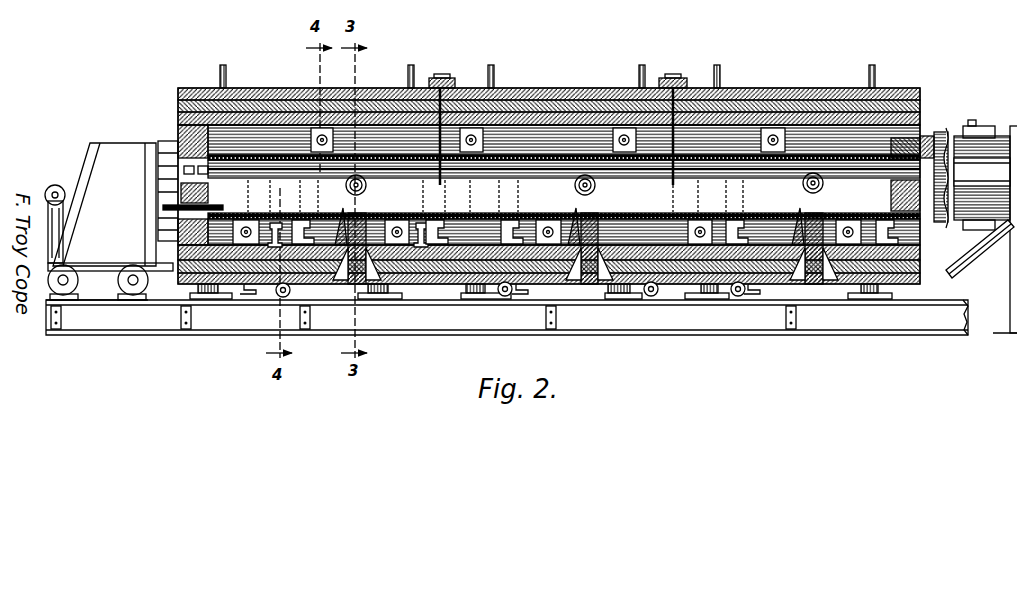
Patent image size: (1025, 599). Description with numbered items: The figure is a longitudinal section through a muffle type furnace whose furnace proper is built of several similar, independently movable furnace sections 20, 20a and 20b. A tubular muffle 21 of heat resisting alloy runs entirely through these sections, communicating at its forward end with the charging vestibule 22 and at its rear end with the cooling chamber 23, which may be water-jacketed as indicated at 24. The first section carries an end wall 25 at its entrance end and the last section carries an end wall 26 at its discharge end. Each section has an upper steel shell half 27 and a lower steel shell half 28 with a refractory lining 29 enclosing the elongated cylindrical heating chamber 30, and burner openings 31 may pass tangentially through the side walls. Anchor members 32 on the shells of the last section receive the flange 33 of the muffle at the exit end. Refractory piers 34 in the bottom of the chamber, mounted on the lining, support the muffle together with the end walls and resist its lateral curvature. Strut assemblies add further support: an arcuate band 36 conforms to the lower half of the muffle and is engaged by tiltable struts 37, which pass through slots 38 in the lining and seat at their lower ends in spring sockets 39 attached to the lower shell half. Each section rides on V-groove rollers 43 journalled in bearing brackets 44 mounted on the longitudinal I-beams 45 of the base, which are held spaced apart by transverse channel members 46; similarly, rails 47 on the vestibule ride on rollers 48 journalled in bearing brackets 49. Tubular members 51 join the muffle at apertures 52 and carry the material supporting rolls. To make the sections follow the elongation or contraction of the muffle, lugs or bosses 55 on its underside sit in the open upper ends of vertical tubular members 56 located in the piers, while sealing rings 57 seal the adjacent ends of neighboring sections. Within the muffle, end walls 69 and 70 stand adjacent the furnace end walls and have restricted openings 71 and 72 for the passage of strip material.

The furnace section 20 is at (233, 80).
The furnace section 20a is at (545, 80).
The furnace section 20b is at (773, 80).
The tubular muffle 21 is at (175, 128).
The charging vestibule 22 is at (106, 144).
The cooling chamber 23 is at (996, 128).
The water jacket 24 is at (982, 122).
The end wall 25 is at (185, 130).
The end wall 26 is at (910, 130).
The upper steel shell half 27 is at (360, 80).
The lower steel shell half 28 is at (244, 280).
The refractory lining 29 is at (264, 100).
The heating chamber 30 is at (340, 128).
The burner opening 31 is at (462, 140).
The anchor member 32 is at (918, 128).
The muffle flange 33 is at (930, 216).
The refractory pier 34 is at (338, 214).
The arcuate band 36 is at (292, 214).
The strut 37 is at (268, 215).
The slot 38 is at (256, 222).
The spring socket 39 is at (390, 285).
The V-groove roller 43 is at (230, 291).
The bearing bracket 44 is at (204, 285).
The I-beam 45 is at (674, 327).
The channel member 46 is at (172, 308).
The rail 47 is at (104, 252).
The roller 48 is at (66, 270).
The bearing bracket 49 is at (125, 278).
The tubular member 51 is at (814, 170).
The aperture 52 is at (795, 178).
The lug or boss 55 is at (359, 177).
The vertical tubular member 56 is at (574, 215).
The sealing ring 57 is at (434, 66).
The end wall 69 is at (165, 190).
The end wall 70 is at (936, 186).
The restricted opening 71 is at (170, 168).
The restricted opening 72 is at (884, 180).